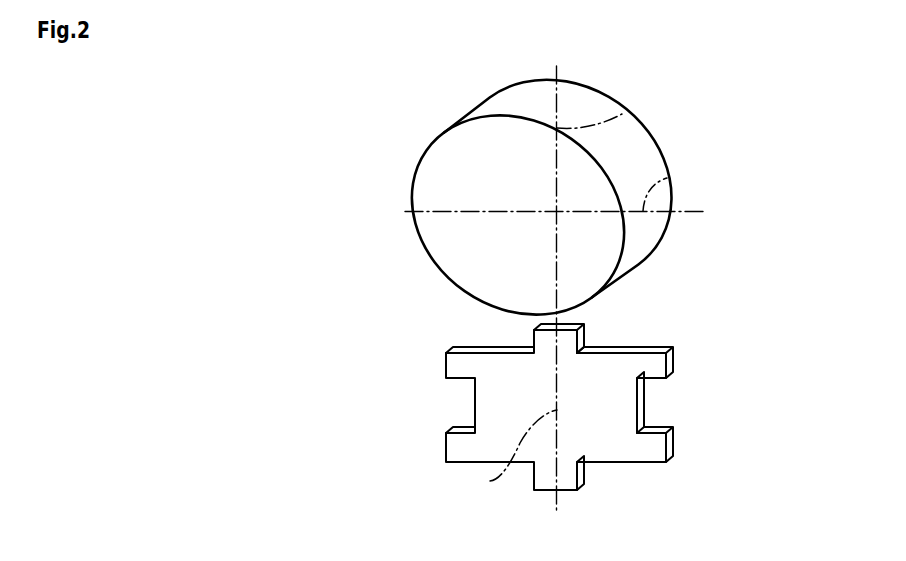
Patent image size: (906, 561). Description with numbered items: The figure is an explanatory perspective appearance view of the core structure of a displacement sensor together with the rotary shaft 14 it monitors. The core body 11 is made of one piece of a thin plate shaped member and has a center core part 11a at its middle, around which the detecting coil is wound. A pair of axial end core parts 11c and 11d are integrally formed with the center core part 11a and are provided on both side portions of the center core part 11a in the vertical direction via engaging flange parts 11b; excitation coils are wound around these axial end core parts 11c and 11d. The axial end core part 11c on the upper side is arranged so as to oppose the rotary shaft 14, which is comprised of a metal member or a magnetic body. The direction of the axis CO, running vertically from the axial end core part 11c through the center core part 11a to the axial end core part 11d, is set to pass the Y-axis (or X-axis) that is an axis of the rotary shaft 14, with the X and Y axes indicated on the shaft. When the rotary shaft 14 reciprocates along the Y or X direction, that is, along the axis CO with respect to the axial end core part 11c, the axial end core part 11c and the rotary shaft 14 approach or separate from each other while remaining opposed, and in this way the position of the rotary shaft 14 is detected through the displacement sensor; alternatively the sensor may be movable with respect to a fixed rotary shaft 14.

The rotary shaft 14 is at (413, 212).
The core body 11 is at (475, 412).
The center core part 11a is at (597, 412).
The engaging flange parts 11b is at (455, 366).
The axial end core part 11c is at (569, 323).
The axial end core part 11d is at (568, 478).
The axis CO is at (507, 454).
The X-axis X is at (667, 178).
The Y-axis Y is at (622, 114).